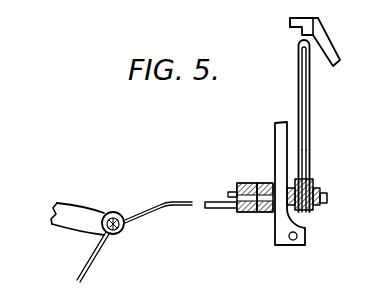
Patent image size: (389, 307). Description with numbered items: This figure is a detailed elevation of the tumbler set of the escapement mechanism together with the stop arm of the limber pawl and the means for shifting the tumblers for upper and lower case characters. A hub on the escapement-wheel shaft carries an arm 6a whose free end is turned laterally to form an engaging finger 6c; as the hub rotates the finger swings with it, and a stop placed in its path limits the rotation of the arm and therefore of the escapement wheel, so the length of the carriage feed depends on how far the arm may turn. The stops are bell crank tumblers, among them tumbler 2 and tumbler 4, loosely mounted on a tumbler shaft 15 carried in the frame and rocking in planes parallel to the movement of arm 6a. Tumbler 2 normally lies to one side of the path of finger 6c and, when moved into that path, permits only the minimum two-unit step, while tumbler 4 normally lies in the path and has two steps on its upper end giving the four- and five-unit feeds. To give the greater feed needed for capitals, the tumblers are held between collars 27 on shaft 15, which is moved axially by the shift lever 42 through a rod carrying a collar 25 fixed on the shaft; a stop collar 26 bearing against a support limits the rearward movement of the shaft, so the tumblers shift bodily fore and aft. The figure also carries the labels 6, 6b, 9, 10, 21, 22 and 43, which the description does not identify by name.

The bell crank tumbler 2 is at (310, 103).
The bell crank tumbler 4 is at (306, 168).
The head block 6 is at (302, 33).
The stop arm 6a is at (335, 53).
The lug 6b is at (290, 20).
The engaging finger 6c is at (316, 18).
The inner rod 9 is at (299, 97).
The disc 10 is at (116, 211).
The tumbler shaft 15 is at (328, 199).
The bracket 21 is at (275, 152).
The link rod 22 is at (208, 208).
The collar 25 is at (250, 212).
The stop collar 26 is at (268, 212).
The collars 27 is at (315, 182).
The shift lever 42 is at (95, 207).
The lever 43 is at (99, 249).